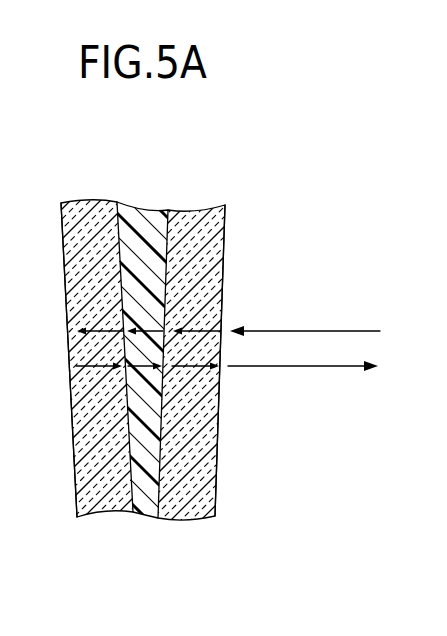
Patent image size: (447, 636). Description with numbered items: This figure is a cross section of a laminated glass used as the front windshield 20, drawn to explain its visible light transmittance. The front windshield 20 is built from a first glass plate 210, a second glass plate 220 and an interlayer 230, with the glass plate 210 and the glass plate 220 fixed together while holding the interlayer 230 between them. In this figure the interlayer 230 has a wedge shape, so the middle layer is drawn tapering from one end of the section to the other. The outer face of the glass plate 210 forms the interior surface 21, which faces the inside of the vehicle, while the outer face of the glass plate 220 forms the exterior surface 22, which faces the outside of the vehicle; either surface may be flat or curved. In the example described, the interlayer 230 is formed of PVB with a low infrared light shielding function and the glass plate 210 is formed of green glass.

The front windshield 20 is at (150, 549).
The interior surface 21 is at (225, 262).
The exterior surface 22 is at (65, 267).
The glass plate 210 is at (200, 216).
The glass plate 220 is at (82, 216).
The interlayer 230 is at (144, 213).